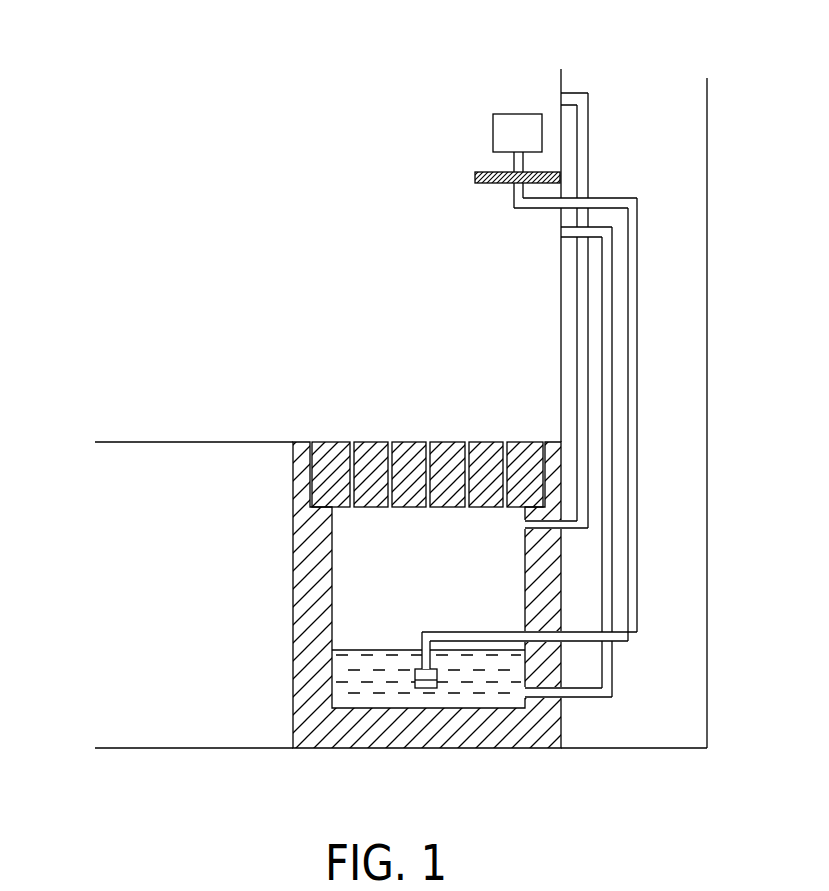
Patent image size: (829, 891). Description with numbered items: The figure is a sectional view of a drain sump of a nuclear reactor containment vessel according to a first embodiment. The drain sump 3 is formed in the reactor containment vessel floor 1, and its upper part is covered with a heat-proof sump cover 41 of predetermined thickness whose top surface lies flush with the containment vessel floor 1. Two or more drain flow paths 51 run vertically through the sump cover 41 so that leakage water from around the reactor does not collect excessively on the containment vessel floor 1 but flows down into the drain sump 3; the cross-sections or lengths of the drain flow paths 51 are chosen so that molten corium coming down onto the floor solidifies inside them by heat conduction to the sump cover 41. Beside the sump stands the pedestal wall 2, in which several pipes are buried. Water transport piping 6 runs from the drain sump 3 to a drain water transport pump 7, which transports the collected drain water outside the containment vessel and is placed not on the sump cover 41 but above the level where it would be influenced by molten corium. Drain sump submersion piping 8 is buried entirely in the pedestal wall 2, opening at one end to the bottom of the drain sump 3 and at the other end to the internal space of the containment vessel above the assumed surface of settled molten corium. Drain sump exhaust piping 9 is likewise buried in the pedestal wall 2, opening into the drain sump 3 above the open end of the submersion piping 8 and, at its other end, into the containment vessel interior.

The reactor containment vessel floor 1 is at (145, 502).
The pedestal wall 2 is at (690, 422).
The drain sump 3 is at (360, 573).
The heat-proof sump cover 41 is at (443, 442).
The drain flow paths 51 is at (349, 442).
The water transport piping 6 is at (635, 377).
The drain water transport pump 7 is at (510, 114).
The drain sump submersion piping 8 is at (613, 682).
The drain sump exhaust piping 9 is at (573, 92).